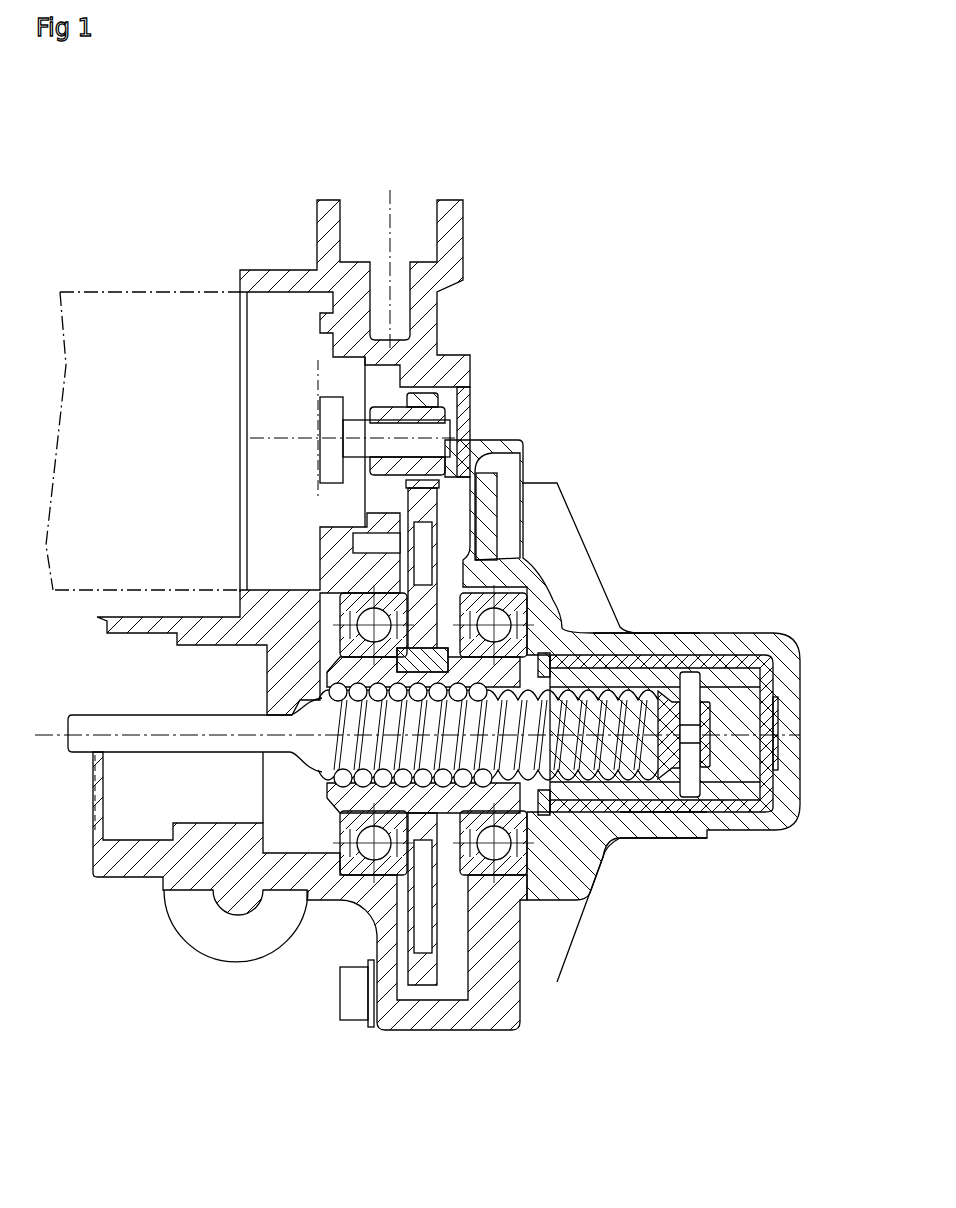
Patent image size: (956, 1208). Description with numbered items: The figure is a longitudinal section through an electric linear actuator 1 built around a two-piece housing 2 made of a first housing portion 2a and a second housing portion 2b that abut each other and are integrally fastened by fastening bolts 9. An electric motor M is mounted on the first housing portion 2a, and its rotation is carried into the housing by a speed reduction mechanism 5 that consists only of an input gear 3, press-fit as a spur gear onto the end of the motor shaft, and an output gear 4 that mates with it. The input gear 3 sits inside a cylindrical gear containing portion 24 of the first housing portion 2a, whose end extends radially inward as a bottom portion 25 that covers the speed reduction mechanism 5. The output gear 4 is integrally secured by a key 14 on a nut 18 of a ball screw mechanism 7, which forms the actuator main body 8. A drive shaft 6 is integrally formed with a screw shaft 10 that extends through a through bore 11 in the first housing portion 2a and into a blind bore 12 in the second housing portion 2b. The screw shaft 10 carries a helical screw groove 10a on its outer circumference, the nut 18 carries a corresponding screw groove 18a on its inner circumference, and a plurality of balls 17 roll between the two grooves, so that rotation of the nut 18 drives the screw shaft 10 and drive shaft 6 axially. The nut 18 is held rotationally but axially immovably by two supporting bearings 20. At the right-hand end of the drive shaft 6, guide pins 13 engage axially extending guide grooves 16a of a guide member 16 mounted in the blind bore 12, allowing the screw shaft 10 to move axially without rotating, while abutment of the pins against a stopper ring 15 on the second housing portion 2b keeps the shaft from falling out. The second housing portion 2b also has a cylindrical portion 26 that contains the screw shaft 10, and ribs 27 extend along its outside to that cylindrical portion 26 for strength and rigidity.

The electric linear actuator 1 is at (690, 406).
The housing 2 is at (448, 545).
The first housing portion 2a is at (420, 325).
The second housing portion 2b is at (498, 443).
The input gear 3 is at (370, 411).
The output gear 4 is at (428, 517).
The speed reduction mechanism 5 is at (389, 497).
The drive shaft 6 is at (221, 720).
The ball screw mechanism 7 is at (535, 852).
The actuator main body 8 is at (678, 672).
The fastening bolts 9 is at (357, 1008).
The screw shaft 10 is at (195, 721).
The helical screw groove 10a is at (330, 688).
The through bore 11 is at (193, 650).
The blind bore 12 is at (627, 793).
The guide pins 13 is at (697, 658).
The key 14 is at (437, 652).
The stopper ring 15 is at (566, 634).
The guide member 16 is at (752, 657).
The guide grooves 16a is at (609, 676).
The balls 17 is at (443, 770).
The nut 18 is at (347, 668).
The screw groove 18a is at (325, 770).
The supporting bearings 20 is at (333, 900).
The gear containing portion 24 is at (407, 394).
The bottom portion 25 is at (470, 413).
The cylindrical portion 26 is at (670, 840).
The ribs 27 is at (556, 543).
The electric motor M is at (147, 312).